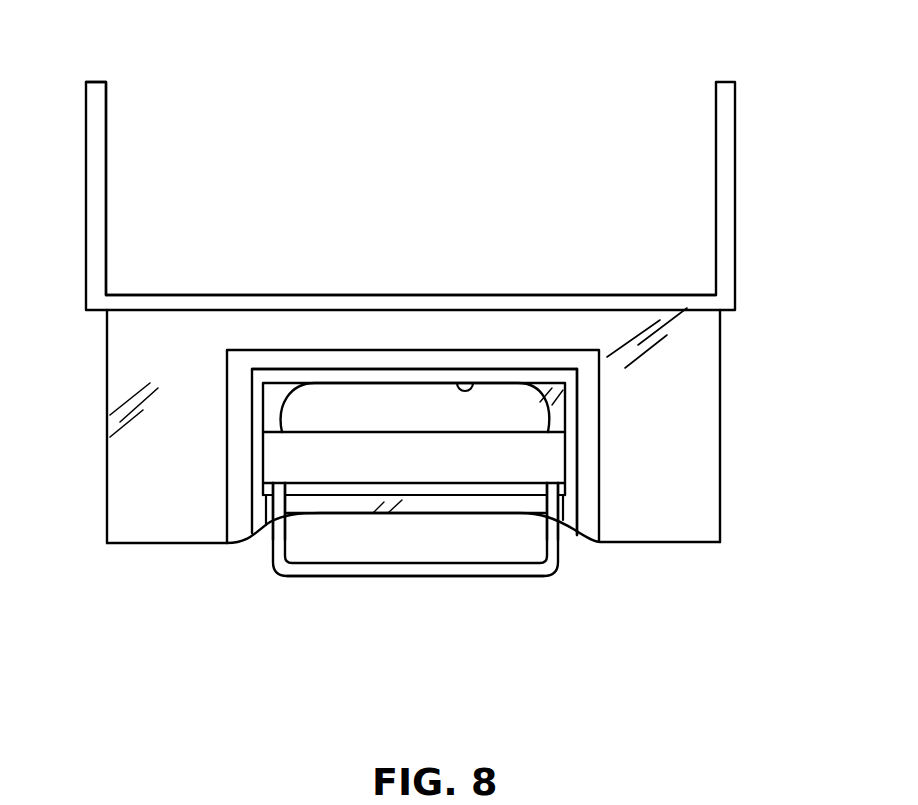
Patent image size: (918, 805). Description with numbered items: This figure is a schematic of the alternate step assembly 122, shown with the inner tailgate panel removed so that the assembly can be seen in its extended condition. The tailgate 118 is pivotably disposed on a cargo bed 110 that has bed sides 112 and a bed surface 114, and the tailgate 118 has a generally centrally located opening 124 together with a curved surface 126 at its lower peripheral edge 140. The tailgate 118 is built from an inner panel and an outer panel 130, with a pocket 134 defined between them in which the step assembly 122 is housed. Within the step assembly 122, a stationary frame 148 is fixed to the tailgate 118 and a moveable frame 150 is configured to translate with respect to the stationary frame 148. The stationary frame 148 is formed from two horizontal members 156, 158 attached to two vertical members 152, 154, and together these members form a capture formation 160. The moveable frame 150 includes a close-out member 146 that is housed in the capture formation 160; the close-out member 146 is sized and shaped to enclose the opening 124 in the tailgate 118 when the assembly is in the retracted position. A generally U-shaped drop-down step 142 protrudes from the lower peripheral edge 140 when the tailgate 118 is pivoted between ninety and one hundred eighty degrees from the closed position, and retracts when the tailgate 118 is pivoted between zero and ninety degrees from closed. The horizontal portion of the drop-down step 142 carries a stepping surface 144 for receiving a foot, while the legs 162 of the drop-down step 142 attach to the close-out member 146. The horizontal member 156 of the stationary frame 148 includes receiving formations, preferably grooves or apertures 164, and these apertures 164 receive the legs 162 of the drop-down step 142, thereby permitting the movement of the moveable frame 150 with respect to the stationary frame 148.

The cargo bed 110 is at (93, 81).
The bed sides 112 is at (107, 152).
The bed surface 114 is at (183, 295).
The tailgate 118 is at (130, 338).
The step assembly 122 is at (341, 682).
The opening 124 is at (367, 397).
The curved surface 126 is at (528, 518).
The outer panel 130 is at (703, 333).
The pocket 134 is at (533, 363).
The lower peripheral edge 140 is at (135, 544).
The drop-down step 142 is at (487, 577).
The stepping surface 144 is at (448, 563).
The close-out member 146 is at (318, 432).
The stationary frame 148 is at (318, 367).
The moveable frame 150 is at (388, 577).
The vertical member 152 is at (250, 432).
The vertical member 154 is at (578, 413).
The horizontal member 156 is at (335, 490).
The horizontal member 158 is at (425, 370).
The capture formation 160 is at (472, 383).
The legs 162 is at (273, 535).
The apertures 164 is at (265, 497).